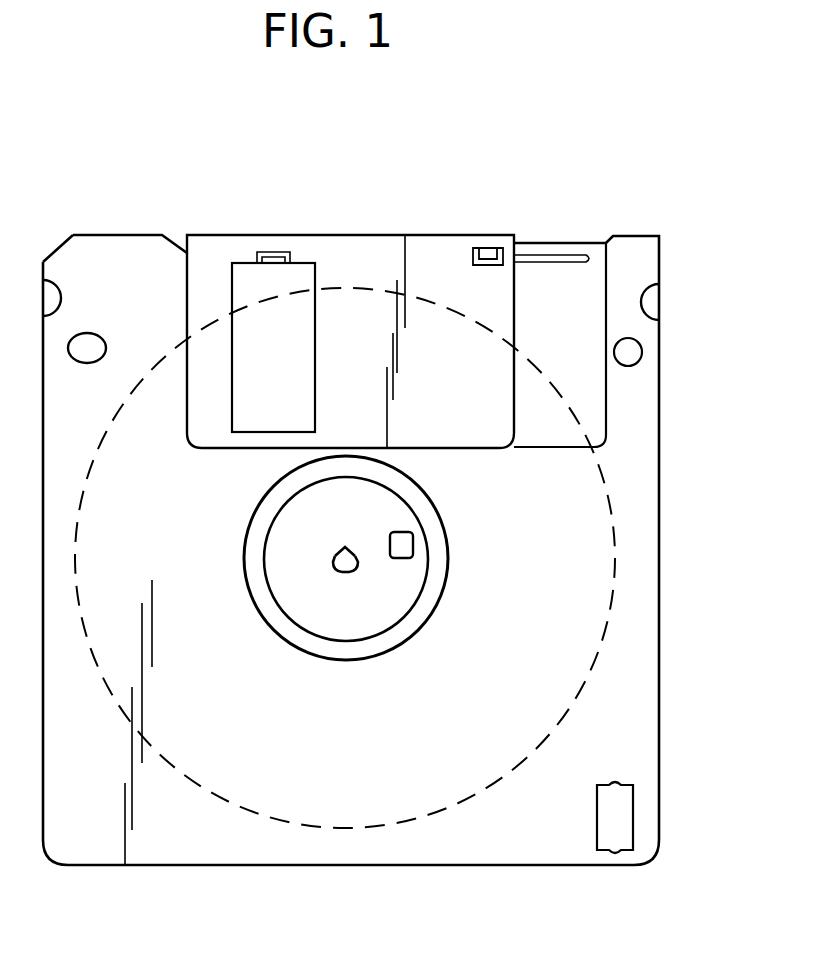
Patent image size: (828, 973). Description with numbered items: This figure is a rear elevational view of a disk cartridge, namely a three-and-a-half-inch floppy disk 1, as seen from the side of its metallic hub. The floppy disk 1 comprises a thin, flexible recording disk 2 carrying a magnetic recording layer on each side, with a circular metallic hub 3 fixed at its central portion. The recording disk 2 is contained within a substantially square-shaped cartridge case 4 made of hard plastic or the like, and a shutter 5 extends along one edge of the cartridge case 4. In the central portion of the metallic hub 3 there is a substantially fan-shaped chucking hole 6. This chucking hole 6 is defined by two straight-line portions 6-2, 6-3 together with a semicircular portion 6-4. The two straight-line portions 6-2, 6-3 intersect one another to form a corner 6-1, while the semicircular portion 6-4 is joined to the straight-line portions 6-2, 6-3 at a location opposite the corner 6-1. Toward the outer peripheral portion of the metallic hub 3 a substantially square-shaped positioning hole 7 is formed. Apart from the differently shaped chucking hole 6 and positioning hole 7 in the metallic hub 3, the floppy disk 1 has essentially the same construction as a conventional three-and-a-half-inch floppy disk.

The 3.5-inch floppy disk 1 is at (633, 232).
The recording disk 2 is at (590, 677).
The metallic hub 3 is at (407, 583).
The cartridge case 4 is at (660, 450).
The shutter 5 is at (428, 236).
The chucking hole 6 is at (334, 571).
The corner 6-1 is at (347, 549).
The straight-line portion 6-2 is at (338, 553).
The straight-line portion 6-3 is at (357, 551).
The semicircular portion 6-4 is at (353, 575).
The positioning hole 7 is at (413, 547).